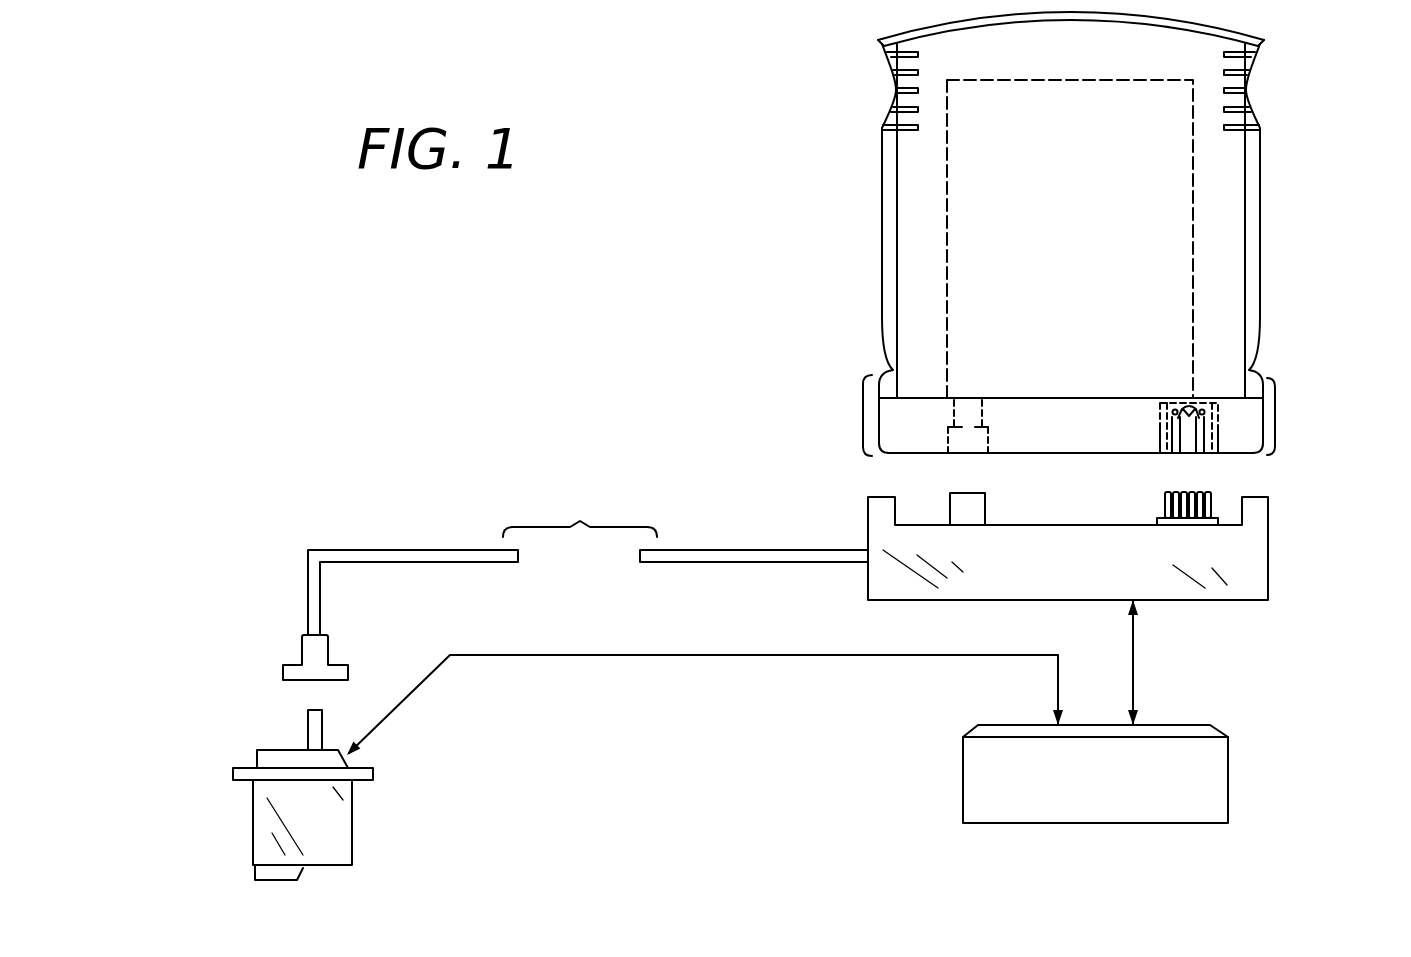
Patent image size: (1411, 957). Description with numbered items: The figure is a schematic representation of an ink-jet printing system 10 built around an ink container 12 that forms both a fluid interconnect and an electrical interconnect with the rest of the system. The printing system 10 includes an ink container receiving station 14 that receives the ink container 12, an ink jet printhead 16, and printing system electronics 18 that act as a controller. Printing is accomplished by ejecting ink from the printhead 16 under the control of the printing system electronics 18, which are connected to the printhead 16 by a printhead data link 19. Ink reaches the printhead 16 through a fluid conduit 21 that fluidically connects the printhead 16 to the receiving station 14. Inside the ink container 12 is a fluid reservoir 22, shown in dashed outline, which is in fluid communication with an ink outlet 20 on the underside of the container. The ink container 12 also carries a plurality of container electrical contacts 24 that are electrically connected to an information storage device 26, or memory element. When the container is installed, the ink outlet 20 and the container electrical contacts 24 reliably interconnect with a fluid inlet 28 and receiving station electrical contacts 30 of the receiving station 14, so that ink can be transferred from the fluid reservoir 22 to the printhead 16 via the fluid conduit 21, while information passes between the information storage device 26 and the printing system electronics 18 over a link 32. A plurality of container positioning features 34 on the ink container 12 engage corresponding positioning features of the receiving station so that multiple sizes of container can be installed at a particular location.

The ink-jet printing system 10 is at (690, 400).
The ink container 12 is at (1262, 215).
The ink container receiving station 14 is at (1286, 537).
The ink jet printhead 16 is at (353, 815).
The printing system electronics 18 is at (1230, 748).
The printhead data link 19 is at (745, 656).
The ink outlet 20 is at (982, 456).
The fluid conduit 21 is at (472, 563).
The fluid reservoir 22 is at (948, 200).
The container electrical contacts 24 is at (1178, 456).
The information storage device 26 is at (1192, 406).
The fluid inlet 28 is at (950, 497).
The receiving station electrical contacts 30 is at (1212, 493).
The link 32 is at (1133, 652).
The container positioning features 34 is at (863, 405).